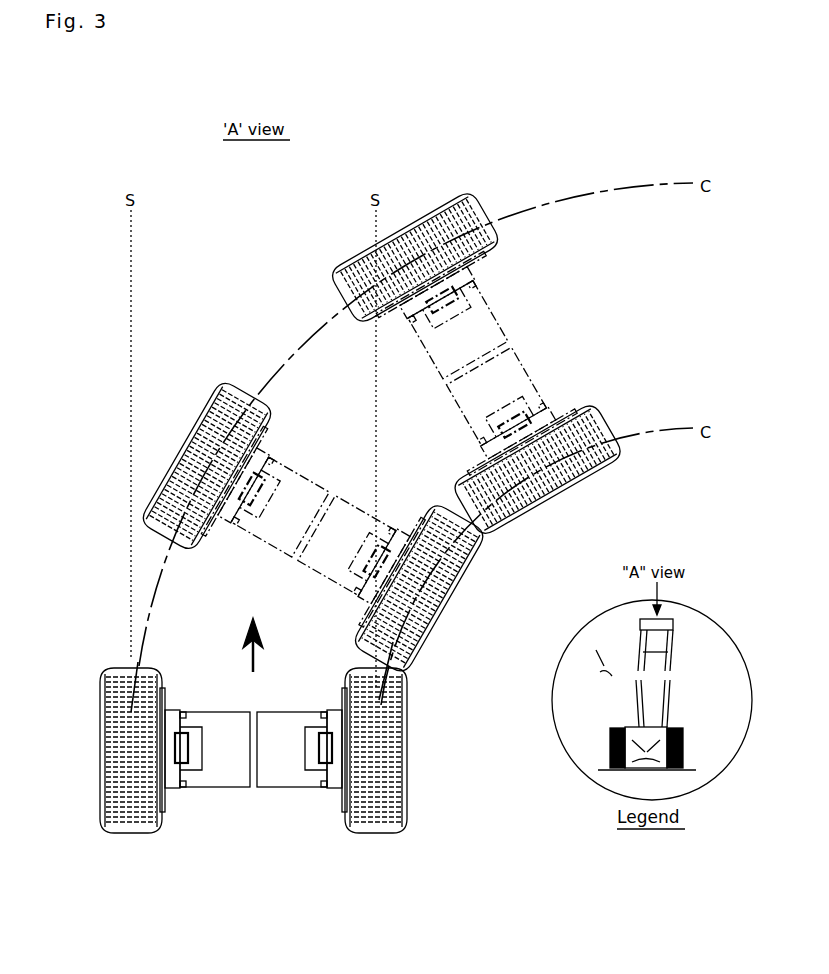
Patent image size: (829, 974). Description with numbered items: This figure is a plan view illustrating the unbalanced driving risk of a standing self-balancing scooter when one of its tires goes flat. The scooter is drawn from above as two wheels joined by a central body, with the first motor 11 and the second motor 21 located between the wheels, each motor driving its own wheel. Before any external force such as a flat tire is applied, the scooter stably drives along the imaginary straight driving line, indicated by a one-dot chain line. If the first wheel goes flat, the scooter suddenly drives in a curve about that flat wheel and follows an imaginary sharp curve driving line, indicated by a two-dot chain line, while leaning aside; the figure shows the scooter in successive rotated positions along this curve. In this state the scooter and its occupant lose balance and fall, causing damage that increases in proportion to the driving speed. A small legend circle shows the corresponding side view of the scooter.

The first motor 11 is at (298, 790).
The second motor 21 is at (214, 790).